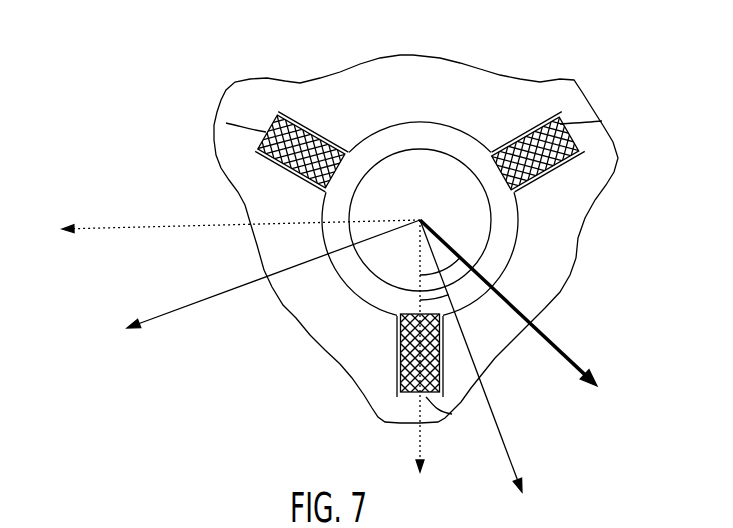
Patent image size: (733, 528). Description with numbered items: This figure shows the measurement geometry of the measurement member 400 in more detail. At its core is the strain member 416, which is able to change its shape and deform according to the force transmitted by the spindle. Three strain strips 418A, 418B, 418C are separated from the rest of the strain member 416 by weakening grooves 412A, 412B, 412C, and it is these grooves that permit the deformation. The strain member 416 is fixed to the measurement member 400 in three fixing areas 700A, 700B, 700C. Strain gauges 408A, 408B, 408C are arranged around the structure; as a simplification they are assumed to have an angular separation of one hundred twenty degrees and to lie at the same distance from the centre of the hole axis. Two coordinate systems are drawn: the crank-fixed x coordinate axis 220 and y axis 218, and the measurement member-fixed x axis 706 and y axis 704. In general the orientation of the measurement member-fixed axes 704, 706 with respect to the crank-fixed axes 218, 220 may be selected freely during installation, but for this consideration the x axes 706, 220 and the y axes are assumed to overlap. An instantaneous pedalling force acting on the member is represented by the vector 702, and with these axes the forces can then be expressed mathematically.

The measurement member 400 is at (404, 237).
The strain gauge 408A is at (601, 118).
The strain gauge 408B is at (461, 422).
The strain gauge 408C is at (222, 122).
The weakening groove 412A is at (509, 240).
The weakening groove 412B is at (347, 282).
The weakening groove 412C is at (401, 124).
The strain member 416 is at (450, 136).
The strain strip 418A is at (523, 110).
The strain strip 418B is at (377, 356).
The strain strip 418C is at (310, 114).
The fixing area 700A is at (578, 108).
The fixing area 700B is at (396, 406).
The fixing area 700C is at (247, 115).
The pedalling force vector 702 is at (580, 368).
The crank-fixed y axis 218 is at (512, 463).
The crank-fixed x coordinate axis 220 is at (165, 313).
The measurement member-fixed y axis 704 is at (416, 443).
The measurement member-fixed x axis 706 is at (101, 229).